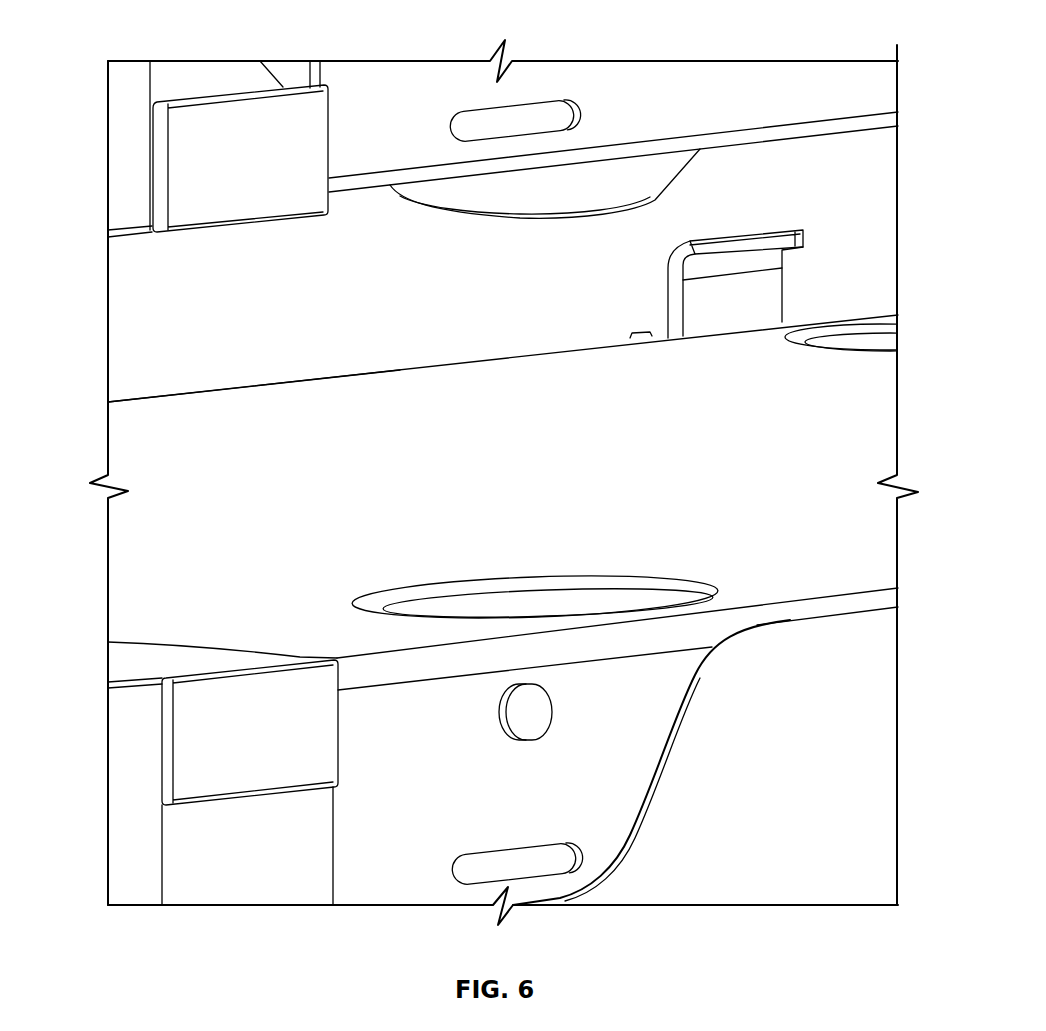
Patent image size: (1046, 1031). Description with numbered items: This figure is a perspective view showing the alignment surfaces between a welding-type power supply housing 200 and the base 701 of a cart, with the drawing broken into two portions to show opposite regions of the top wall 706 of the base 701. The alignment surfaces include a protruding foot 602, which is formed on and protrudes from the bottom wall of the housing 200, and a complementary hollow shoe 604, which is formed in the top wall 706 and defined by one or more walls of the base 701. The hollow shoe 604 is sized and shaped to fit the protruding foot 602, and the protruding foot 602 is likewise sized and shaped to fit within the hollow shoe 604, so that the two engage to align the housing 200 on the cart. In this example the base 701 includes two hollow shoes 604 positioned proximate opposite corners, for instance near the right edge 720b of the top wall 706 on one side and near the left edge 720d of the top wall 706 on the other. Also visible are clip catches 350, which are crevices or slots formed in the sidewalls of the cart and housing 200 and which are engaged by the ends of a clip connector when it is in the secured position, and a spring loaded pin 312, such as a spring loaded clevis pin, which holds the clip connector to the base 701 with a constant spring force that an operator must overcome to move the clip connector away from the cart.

The housing 200 is at (126, 148).
The spring loaded pin 312 is at (541, 715).
The clip catch 350 is at (530, 96).
The protruding foot 602 is at (551, 192).
The hollow shoe 604 is at (843, 328).
The base 701 is at (184, 388).
The top wall 706 is at (878, 418).
The right edge 720b is at (399, 362).
The left edge 720d is at (806, 586).